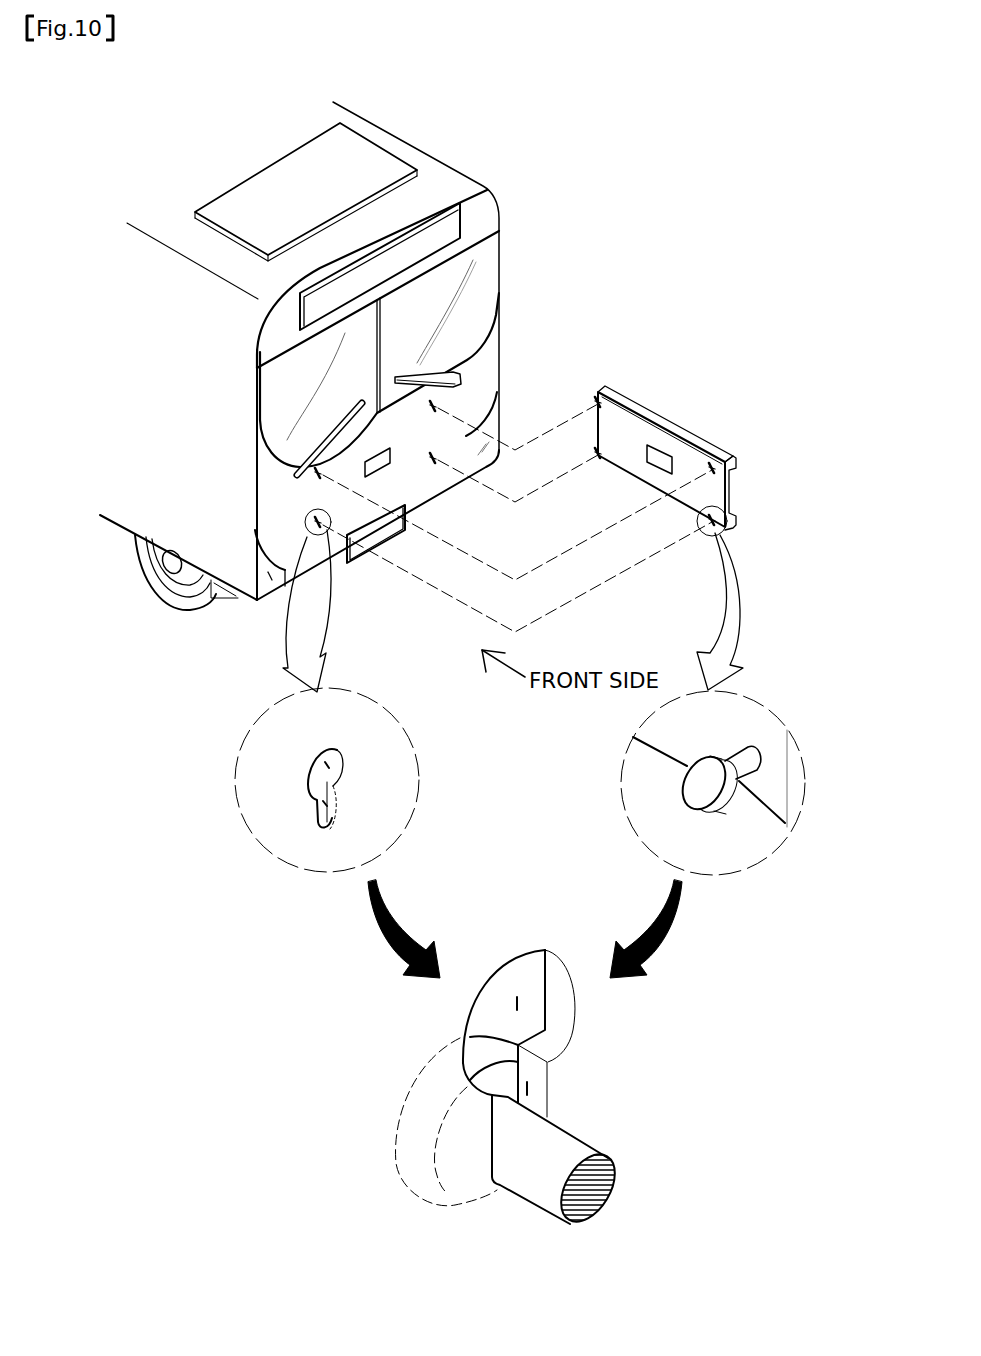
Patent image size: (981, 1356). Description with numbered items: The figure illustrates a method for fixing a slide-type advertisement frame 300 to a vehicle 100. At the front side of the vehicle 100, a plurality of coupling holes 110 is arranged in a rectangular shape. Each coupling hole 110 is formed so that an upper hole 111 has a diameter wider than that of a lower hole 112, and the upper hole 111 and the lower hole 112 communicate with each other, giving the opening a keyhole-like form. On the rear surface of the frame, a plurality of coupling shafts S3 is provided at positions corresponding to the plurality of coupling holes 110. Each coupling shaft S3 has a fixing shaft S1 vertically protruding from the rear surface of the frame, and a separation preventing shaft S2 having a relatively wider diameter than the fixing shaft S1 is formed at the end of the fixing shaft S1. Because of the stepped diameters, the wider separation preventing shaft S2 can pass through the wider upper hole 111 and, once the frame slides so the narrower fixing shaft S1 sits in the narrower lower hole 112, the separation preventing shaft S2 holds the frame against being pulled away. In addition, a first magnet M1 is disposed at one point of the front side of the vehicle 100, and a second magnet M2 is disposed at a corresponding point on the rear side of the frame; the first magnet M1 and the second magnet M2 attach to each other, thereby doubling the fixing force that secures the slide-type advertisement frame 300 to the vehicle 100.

The vehicle 100 is at (447, 185).
The slide-type advertisement frame 300 is at (719, 403).
The first magnet M1 is at (380, 462).
The second magnet M2 is at (658, 458).
The coupling hole 110 is at (327, 523).
The upper hole 111 is at (329, 765).
The lower hole 112 is at (327, 803).
The fixing shaft S1 is at (752, 769).
The separation preventing shaft S2 is at (730, 801).
The coupling shaft S3 is at (817, 945).